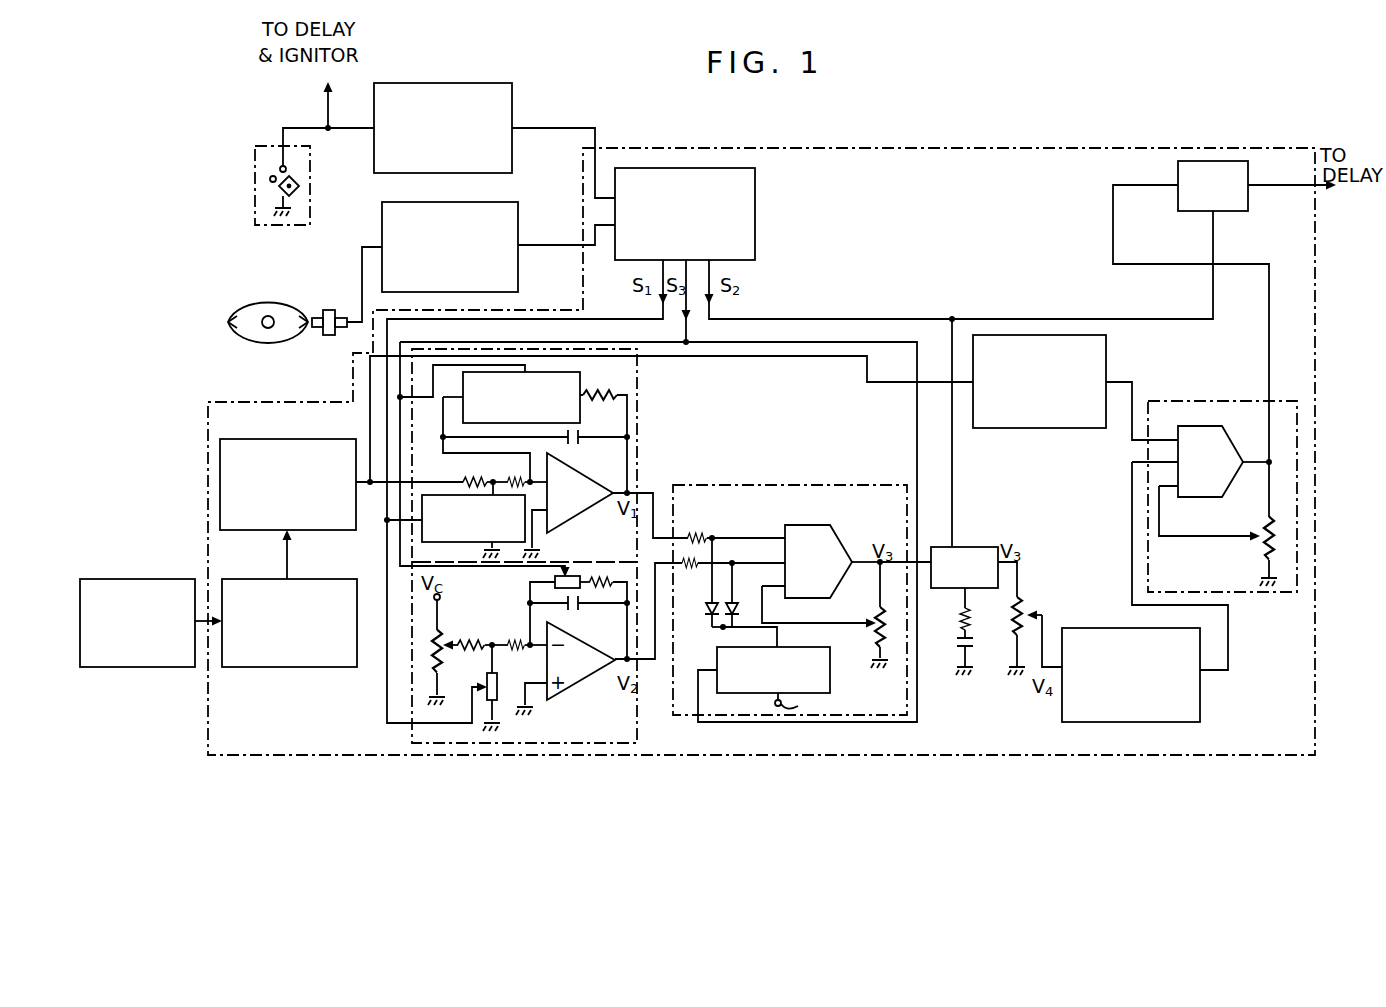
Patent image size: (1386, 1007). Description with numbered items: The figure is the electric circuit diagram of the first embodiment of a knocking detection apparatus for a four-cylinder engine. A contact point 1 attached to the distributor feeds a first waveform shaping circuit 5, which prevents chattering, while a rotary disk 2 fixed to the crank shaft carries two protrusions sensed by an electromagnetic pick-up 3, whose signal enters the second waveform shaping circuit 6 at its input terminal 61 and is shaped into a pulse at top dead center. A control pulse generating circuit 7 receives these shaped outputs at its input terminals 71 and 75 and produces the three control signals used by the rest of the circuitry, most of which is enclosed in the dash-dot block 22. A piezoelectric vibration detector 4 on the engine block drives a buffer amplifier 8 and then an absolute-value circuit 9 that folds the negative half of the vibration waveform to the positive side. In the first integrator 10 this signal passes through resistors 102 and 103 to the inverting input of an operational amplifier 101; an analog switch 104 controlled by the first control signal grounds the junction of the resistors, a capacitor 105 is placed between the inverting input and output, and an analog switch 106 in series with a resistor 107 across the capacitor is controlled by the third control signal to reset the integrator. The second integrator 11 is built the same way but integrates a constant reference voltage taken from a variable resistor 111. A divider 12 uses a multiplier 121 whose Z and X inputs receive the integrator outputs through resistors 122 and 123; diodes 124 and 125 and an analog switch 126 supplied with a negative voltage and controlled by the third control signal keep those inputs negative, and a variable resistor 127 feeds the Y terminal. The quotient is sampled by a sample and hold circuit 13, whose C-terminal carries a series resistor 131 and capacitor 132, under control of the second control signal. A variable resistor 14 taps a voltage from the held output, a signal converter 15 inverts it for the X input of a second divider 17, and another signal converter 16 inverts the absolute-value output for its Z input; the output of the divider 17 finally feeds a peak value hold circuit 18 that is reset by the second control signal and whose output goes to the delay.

The contact point 1 is at (252, 165).
The rotary disk 2 is at (233, 338).
The electromagnetic pick-up 3 is at (332, 335).
The vibration detector 4 is at (165, 579).
The first waveform shaping circuit 5 is at (512, 99).
The second waveform shaping circuit 6 is at (518, 212).
The control pulse generating circuit 7 is at (755, 203).
The buffer amplifier 8 is at (337, 579).
The absolute-value circuit 9 is at (300, 439).
The first integrator 10 is at (638, 455).
The second integrator 11 is at (488, 746).
The divider 12 is at (778, 487).
The sample and hold circuit 13 is at (961, 547).
The variable resistor 14 is at (1013, 640).
The signal converter 15 is at (1079, 628).
The signal converter 16 is at (1043, 428).
The divider 17 is at (1201, 400).
The peak value hold circuit 18 is at (1178, 200).
The control circuit 22 is at (994, 147).
The input terminal 61 is at (366, 246).
The input terminal 71 is at (605, 198).
The input terminal 75 is at (613, 225).
The operational amplifier 101 is at (586, 522).
The resistor 102 is at (471, 480).
The resistor 103 is at (519, 480).
The analog switch 104 is at (472, 545).
The capacitor 105 is at (574, 445).
The analog switch 106 is at (591, 394).
The resistor 107 is at (620, 392).
The variable resistor 111 is at (445, 655).
The multiplier 121 is at (838, 540).
The resistor 122 is at (690, 536).
The resistor 123 is at (692, 566).
The diode 124 is at (706, 612).
The diode 125 is at (738, 600).
The analog switch 126 is at (830, 668).
The variable resistor 127 is at (876, 642).
The resistor 131 is at (960, 619).
The capacitor 132 is at (958, 641).